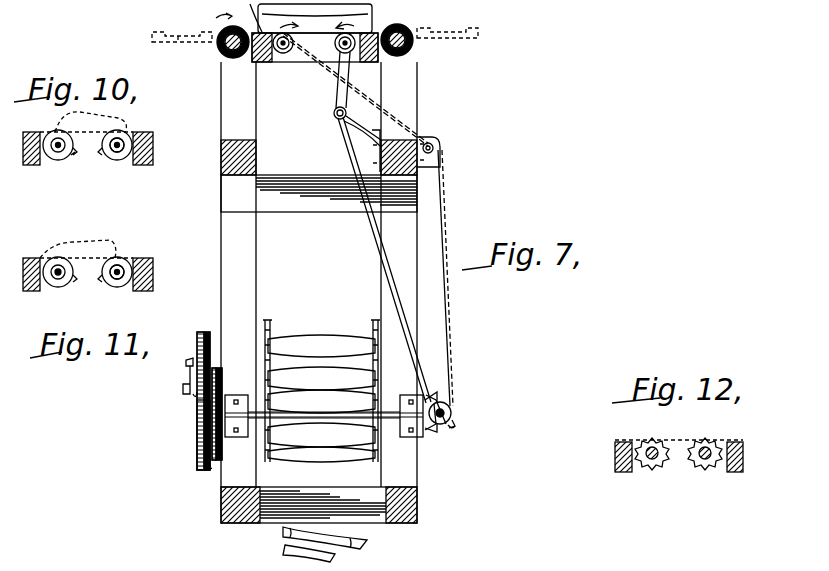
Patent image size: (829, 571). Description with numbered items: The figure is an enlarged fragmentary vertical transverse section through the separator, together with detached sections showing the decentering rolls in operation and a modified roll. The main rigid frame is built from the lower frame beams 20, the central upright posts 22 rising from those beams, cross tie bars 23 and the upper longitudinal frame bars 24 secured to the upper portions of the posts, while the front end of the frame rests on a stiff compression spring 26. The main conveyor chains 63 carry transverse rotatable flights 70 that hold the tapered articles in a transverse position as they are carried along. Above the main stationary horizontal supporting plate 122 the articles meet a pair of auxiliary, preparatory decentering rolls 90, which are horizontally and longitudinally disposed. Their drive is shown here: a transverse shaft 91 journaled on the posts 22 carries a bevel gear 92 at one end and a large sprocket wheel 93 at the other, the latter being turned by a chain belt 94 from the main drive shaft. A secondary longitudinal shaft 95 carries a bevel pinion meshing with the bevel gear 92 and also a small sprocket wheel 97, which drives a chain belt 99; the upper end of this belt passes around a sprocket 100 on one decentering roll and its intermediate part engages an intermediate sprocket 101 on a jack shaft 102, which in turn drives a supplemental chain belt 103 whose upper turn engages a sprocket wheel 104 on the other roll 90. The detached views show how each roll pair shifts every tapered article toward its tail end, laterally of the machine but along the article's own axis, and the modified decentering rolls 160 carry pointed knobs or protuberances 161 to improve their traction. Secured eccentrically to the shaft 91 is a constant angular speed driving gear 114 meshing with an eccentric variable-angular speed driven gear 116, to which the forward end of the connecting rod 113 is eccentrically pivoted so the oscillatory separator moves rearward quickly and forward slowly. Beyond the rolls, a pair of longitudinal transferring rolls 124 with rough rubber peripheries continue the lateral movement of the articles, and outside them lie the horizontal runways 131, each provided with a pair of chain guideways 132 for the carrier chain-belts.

In FIG. 7, the lower frame beam 20 is at (418, 497).
In FIG. 7, the central upright post 22 is at (258, 257).
In FIG. 7, the cross tie bar 23 is at (319, 346).
In FIG. 7, the upper longitudinal frame bar 24 is at (383, 156).
In FIG. 7, the compression spring 26 is at (362, 543).
In FIG. 7, the main conveyor chain 63 is at (372, 320).
In FIG. 7, the rotatable flight 70 is at (315, 375).
In FIG. 7, the decentering roll 90 is at (279, 51).
In FIG. 10, the decentering roll 90 is at (56, 160).
In FIG. 11, the decentering roll 90 is at (55, 287).
In FIG. 7, the transverse shaft 91 is at (314, 420).
In FIG. 7, the bevel gear 92 is at (432, 440).
In FIG. 7, the large sprocket wheel 93 is at (217, 462).
In FIG. 7, the chain belt 94 is at (205, 472).
In FIG. 7, the secondary longitudinal shaft 95 is at (454, 414).
In FIG. 7, the small sprocket wheel 97 is at (452, 404).
In FIG. 7, the chain belt 99 is at (450, 305).
In FIG. 7, the sprocket 100 is at (286, 52).
In FIG. 10, the sprocket 100 is at (66, 158).
In FIG. 11, the sprocket 100 is at (64, 286).
In FIG. 12, the sprocket 100 is at (656, 462).
In FIG. 7, the intermediate sprocket 101 is at (340, 120).
In FIG. 7, the jack shaft 102 is at (334, 113).
In FIG. 7, the supplemental chain belt 103 is at (346, 72).
In FIG. 7, the sprocket wheel 104 is at (333, 47).
In FIG. 10, the sprocket wheel 104 is at (122, 158).
In FIG. 11, the sprocket wheel 104 is at (124, 286).
In FIG. 12, the sprocket wheel 104 is at (712, 463).
In FIG. 7, the connecting rod 113 is at (186, 373).
In FIG. 7, the constant angular speed driving gear 114 is at (197, 436).
In FIG. 7, the variable-angular speed driven gear 116 is at (203, 333).
In FIG. 7, the main stationary horizontal supporting plate 122 is at (378, 34).
In FIG. 10, the main stationary horizontal supporting plate 122 is at (143, 132).
In FIG. 11, the main stationary horizontal supporting plate 122 is at (145, 258).
In FIG. 12, the main stationary horizontal supporting plate 122 is at (620, 441).
In FIG. 7, the transferring roll 124 is at (222, 58).
In FIG. 7, the horizontal runway 131 is at (180, 42).
In FIG. 7, the chain guideway 132 is at (202, 32).
In FIG. 12, the modified decentering roll 160 is at (648, 470).
In FIG. 12, the pointed knob 161 is at (705, 440).